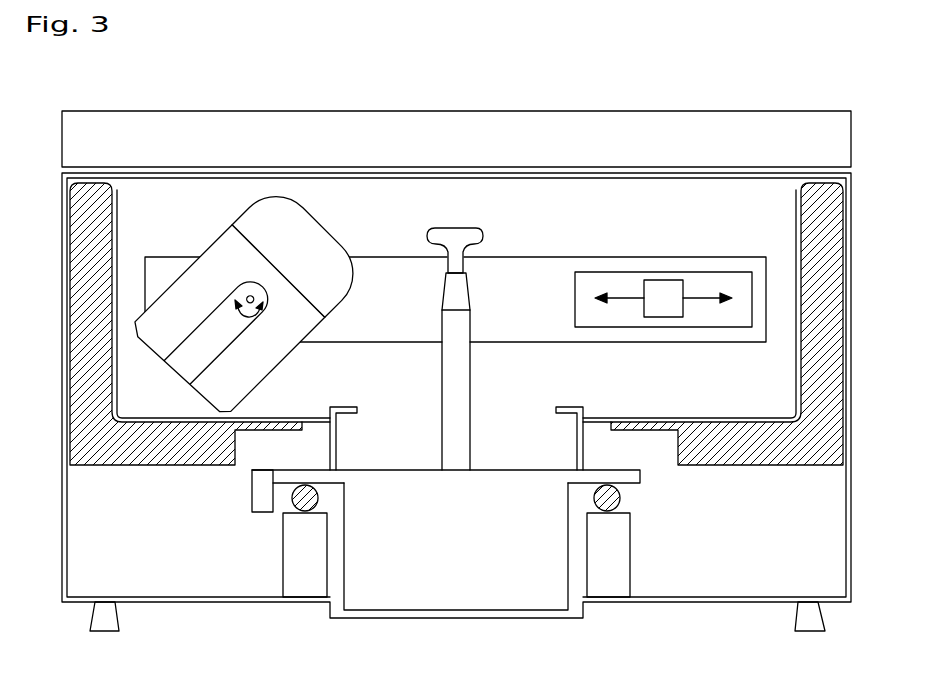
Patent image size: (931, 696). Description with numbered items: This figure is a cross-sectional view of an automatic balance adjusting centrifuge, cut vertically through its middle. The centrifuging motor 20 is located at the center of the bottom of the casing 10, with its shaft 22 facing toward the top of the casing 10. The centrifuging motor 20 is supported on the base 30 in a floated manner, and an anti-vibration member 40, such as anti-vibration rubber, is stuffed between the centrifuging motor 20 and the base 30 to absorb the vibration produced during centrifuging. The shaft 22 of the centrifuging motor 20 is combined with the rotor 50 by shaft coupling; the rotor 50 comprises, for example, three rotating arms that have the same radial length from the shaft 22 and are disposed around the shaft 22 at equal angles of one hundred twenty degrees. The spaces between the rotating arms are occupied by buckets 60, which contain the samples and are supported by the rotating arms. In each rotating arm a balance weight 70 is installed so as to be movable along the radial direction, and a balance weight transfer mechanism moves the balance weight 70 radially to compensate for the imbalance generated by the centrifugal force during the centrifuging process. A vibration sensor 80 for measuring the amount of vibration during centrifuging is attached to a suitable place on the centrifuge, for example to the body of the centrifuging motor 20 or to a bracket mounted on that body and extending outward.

The casing 10 is at (715, 598).
The centrifuging motor 20 is at (445, 598).
The shaft 22 is at (460, 295).
The base 30 is at (298, 585).
The anti-vibration member 40 is at (298, 510).
The rotor 50 is at (556, 257).
The bucket 60 is at (209, 248).
The balance weight 70 is at (656, 287).
The vibration sensor 80 is at (252, 487).